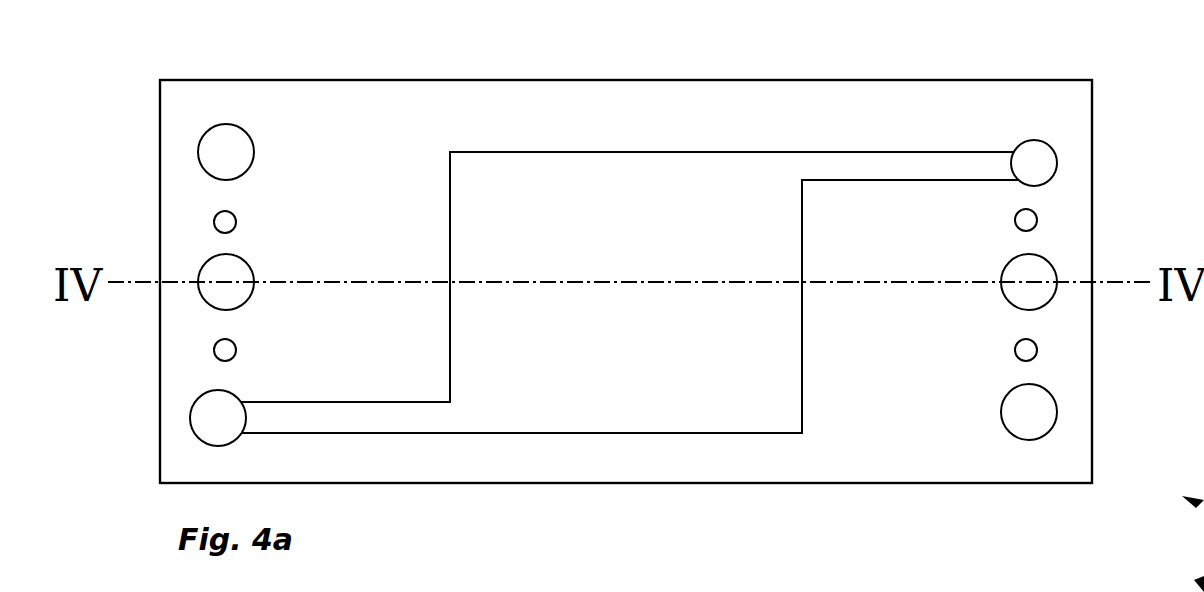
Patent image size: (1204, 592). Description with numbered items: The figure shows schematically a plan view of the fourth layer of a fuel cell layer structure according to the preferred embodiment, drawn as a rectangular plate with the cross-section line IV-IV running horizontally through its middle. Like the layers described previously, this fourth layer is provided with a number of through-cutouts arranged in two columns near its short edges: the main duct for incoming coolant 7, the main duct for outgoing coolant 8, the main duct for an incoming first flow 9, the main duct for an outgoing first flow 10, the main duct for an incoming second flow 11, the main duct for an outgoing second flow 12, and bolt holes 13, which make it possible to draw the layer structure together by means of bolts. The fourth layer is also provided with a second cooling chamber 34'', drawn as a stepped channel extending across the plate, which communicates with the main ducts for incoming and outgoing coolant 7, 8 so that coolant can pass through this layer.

The second cooling chamber 34'' is at (629, 232).
The main duct for an outgoing second flow 12 is at (234, 143).
The main duct for an outgoing first flow 10 is at (236, 283).
The main duct for outgoing coolant 8 is at (210, 418).
The main duct for incoming coolant 7 is at (1040, 157).
The bolt holes 13 is at (1028, 217).
The main duct for an incoming first flow 9 is at (1042, 282).
The main duct for an incoming second flow 11 is at (1040, 420).